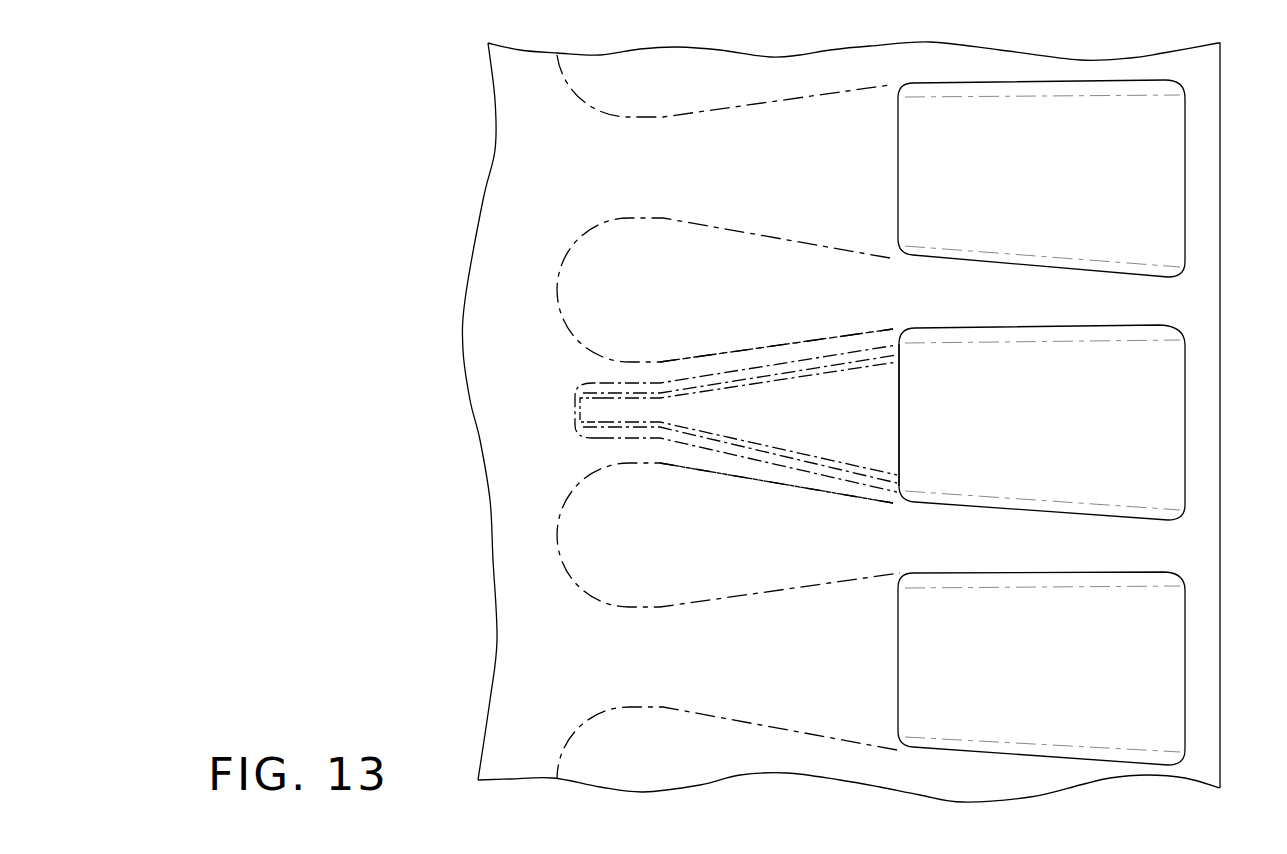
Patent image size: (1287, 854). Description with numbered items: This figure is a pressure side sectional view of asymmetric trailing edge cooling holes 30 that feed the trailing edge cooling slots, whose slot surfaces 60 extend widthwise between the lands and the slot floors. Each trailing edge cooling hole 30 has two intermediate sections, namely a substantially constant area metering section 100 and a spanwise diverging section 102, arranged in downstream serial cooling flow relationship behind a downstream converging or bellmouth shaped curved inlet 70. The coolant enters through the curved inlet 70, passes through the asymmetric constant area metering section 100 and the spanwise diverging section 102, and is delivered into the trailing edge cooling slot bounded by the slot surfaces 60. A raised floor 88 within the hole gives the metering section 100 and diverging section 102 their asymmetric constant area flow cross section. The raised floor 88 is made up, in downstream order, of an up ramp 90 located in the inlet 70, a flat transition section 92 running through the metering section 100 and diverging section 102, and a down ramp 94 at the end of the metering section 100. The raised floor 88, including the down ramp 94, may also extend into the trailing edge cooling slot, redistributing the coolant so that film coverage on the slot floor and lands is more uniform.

The trailing edge cooling hole 30 is at (843, 112).
The slot surface 60 is at (1150, 380).
The inlet 70 is at (588, 370).
The raised floor 88 is at (840, 357).
The up ramp 90 is at (597, 412).
The flat transition section 92 is at (693, 412).
The down ramp 94 is at (878, 418).
The metering section 100 is at (637, 372).
The spanwise diverging section 102 is at (813, 487).